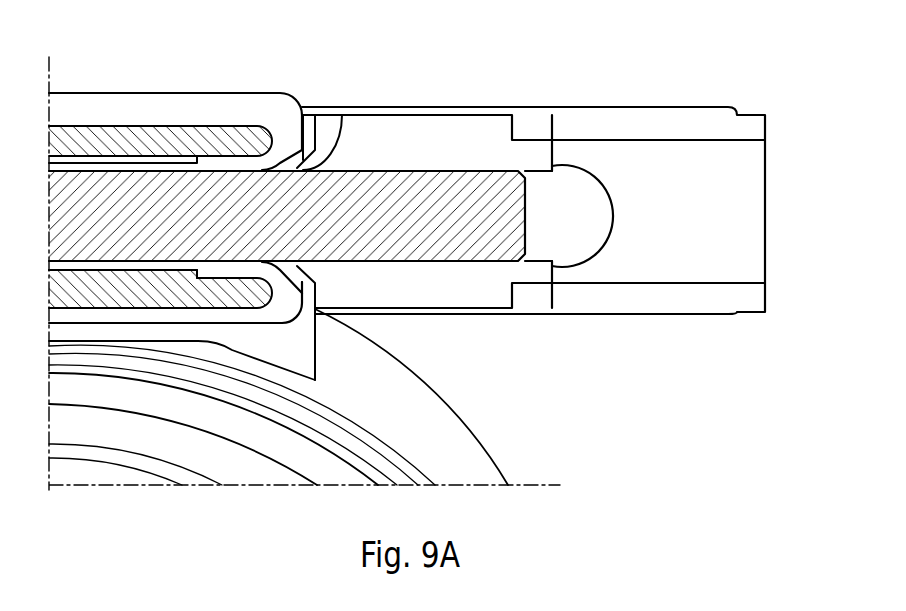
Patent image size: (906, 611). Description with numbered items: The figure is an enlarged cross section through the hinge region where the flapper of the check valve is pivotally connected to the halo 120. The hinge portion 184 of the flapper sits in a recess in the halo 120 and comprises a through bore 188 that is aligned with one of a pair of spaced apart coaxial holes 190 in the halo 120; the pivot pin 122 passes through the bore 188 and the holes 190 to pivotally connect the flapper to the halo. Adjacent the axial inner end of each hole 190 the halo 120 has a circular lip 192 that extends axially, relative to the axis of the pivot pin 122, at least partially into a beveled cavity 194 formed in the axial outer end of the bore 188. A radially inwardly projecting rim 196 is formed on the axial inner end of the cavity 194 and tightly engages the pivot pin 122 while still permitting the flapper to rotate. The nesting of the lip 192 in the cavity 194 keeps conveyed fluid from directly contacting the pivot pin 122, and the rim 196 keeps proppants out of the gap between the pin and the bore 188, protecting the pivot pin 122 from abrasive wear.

The halo 120 is at (738, 120).
The pivot pin 122 is at (481, 176).
The hinge portion 184 is at (226, 92).
The through bore 188 is at (132, 162).
The holes 190 is at (612, 212).
The circular lip 192 is at (313, 264).
The beveled cavity 194 is at (341, 114).
The rim 196 is at (268, 176).